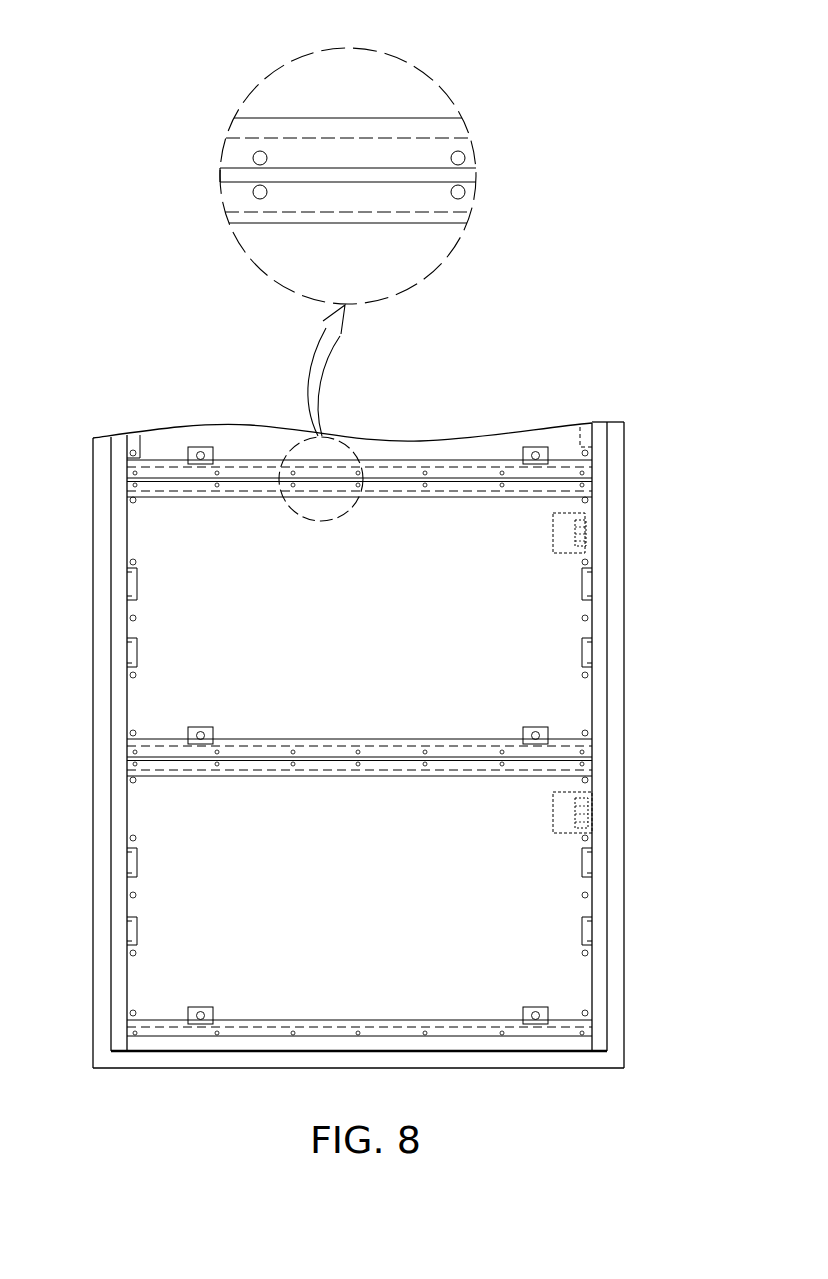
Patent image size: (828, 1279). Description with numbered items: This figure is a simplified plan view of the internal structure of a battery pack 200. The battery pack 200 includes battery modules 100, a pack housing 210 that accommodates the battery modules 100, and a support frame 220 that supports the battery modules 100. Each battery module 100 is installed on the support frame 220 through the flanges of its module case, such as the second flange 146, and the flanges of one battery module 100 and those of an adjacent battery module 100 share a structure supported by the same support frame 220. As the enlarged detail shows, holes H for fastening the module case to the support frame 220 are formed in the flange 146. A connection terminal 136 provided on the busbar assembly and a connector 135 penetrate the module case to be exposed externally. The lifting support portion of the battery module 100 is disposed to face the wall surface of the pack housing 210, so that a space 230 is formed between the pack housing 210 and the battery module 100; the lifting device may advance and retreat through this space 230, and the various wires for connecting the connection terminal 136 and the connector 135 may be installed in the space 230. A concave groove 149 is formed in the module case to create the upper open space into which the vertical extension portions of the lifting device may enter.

The battery pack 200 is at (86, 343).
The pack housing 210 is at (610, 562).
The support frame 220 is at (457, 176).
The space 230 is at (597, 831).
The battery module 100 is at (157, 631).
The connector 135 is at (565, 527).
The connection terminal 136 is at (197, 727).
The second flange 146 is at (461, 124).
The concave groove 149 is at (583, 582).
The hole H is at (260, 151).